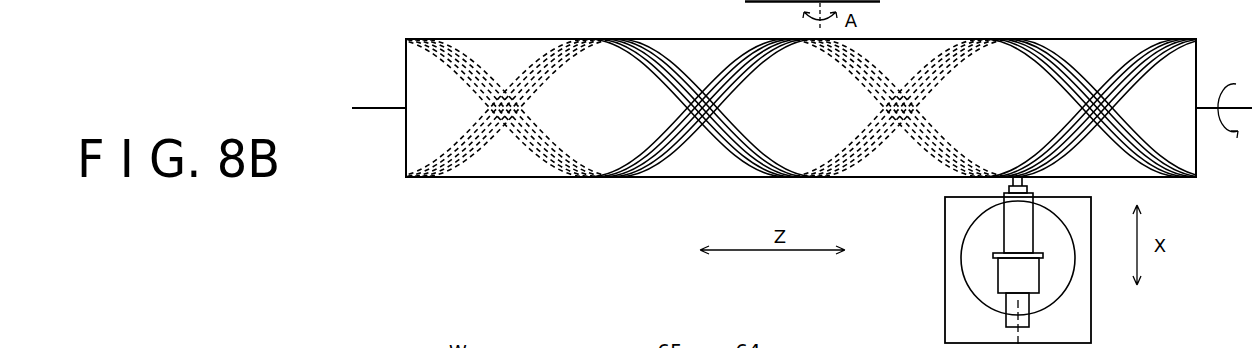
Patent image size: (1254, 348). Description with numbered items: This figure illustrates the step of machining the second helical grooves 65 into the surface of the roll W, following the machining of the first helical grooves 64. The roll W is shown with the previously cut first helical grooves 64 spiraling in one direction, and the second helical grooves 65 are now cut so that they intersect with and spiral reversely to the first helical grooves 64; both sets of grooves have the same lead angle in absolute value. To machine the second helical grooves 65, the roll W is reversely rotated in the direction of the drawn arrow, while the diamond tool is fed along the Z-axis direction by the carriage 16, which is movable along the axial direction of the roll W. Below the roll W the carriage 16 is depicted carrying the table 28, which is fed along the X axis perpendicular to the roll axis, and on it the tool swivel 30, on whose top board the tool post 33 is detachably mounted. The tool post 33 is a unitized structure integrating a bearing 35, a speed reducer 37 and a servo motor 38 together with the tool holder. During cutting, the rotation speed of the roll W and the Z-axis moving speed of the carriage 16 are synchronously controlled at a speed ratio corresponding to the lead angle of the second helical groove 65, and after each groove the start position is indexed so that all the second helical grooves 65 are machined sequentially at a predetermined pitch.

The carriage 16 is at (1002, 263).
The table 28 is at (955, 217).
The tool swivel 30 is at (975, 270).
The tool post 33 is at (1056, 280).
The bearing 35 is at (1027, 215).
The speed reducer 37 is at (1030, 280).
The servo motor 38 is at (1008, 317).
The first V-shaped helical grooves 64 is at (1130, 60).
The second V-shaped helical grooves 65 is at (1057, 57).
The roll W is at (503, 160).